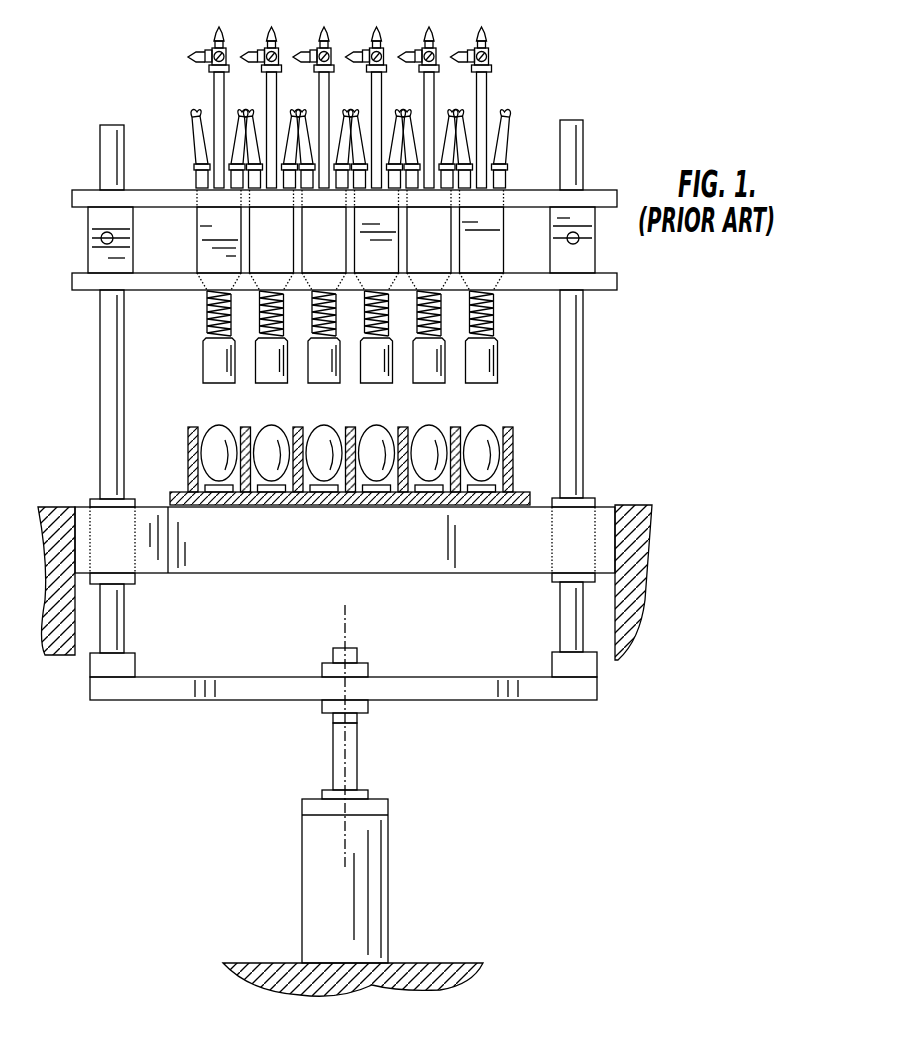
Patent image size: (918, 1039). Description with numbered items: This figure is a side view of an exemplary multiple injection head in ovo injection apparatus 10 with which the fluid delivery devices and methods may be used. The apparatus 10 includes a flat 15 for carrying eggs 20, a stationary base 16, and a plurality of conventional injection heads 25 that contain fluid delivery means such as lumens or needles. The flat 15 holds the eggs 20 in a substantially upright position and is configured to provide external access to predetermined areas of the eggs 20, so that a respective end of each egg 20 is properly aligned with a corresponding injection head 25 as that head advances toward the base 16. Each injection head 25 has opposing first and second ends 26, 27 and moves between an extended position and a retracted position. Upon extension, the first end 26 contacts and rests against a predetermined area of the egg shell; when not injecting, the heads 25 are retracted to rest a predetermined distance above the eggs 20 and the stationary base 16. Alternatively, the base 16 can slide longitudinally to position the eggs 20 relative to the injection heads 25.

The in ovo injection apparatus 10 is at (752, 427).
The flat 15 is at (514, 440).
The stationary base 16 is at (608, 503).
The eggs 20 is at (270, 437).
The injection heads 25 is at (262, 244).
The first end 26 is at (497, 377).
The second end 27 is at (486, 60).